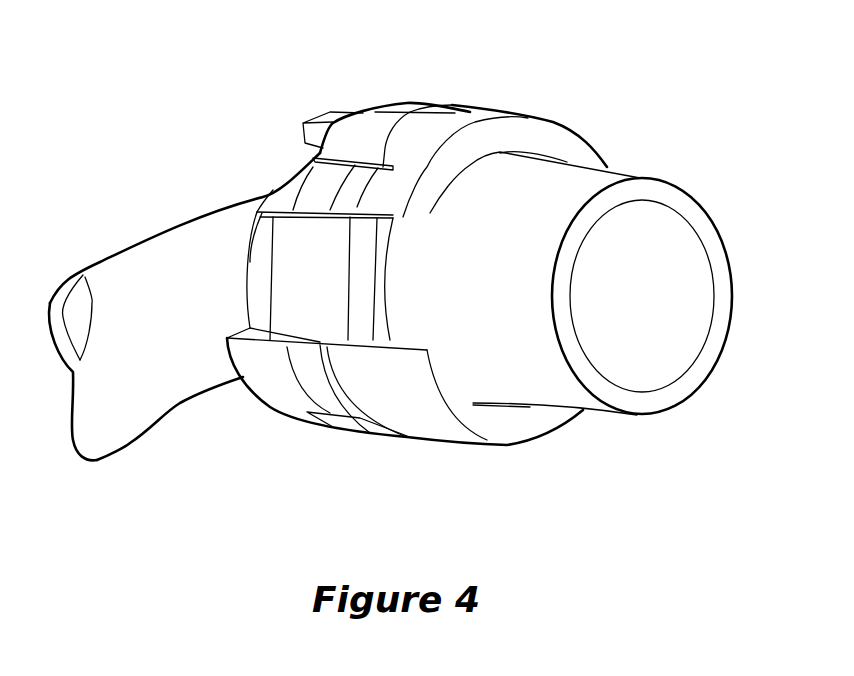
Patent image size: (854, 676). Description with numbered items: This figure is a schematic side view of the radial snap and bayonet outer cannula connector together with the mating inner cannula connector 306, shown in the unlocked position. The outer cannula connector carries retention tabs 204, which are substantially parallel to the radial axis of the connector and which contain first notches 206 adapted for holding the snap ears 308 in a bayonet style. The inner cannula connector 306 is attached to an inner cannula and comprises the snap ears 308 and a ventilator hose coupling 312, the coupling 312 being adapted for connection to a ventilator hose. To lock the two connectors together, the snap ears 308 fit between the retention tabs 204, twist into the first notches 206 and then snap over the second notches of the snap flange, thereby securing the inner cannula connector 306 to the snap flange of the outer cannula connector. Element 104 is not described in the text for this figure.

The arm 104 is at (180, 397).
The retention tabs 204 is at (558, 133).
The first notches 206 is at (388, 160).
The inner cannula connector 306 is at (625, 430).
The snap ears 308 is at (260, 237).
The ventilator hose coupling 312 is at (665, 192).